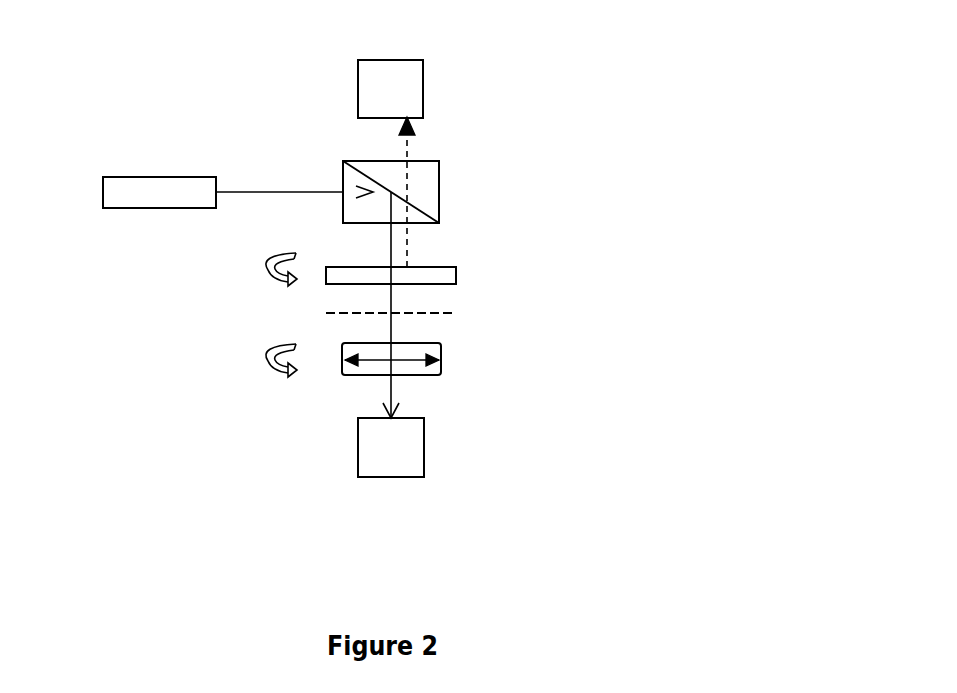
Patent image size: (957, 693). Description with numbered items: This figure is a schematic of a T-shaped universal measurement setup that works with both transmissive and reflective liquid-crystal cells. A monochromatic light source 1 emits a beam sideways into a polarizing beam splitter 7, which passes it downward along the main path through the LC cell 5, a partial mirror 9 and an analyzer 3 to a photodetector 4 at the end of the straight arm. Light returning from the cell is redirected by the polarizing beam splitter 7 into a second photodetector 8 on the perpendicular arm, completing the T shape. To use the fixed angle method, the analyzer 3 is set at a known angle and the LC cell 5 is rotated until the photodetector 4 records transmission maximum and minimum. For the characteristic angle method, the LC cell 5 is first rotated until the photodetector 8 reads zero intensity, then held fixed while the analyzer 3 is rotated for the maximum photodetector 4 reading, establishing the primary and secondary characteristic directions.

The monochromatic light source 1 is at (119, 226).
The analyzer 3 is at (459, 361).
The photodetector 4 is at (530, 447).
The LC cell 5 is at (449, 267).
The polarizing beam splitter 7 is at (582, 192).
The photodetector 8 is at (530, 87).
The partial mirror 9 is at (514, 308).